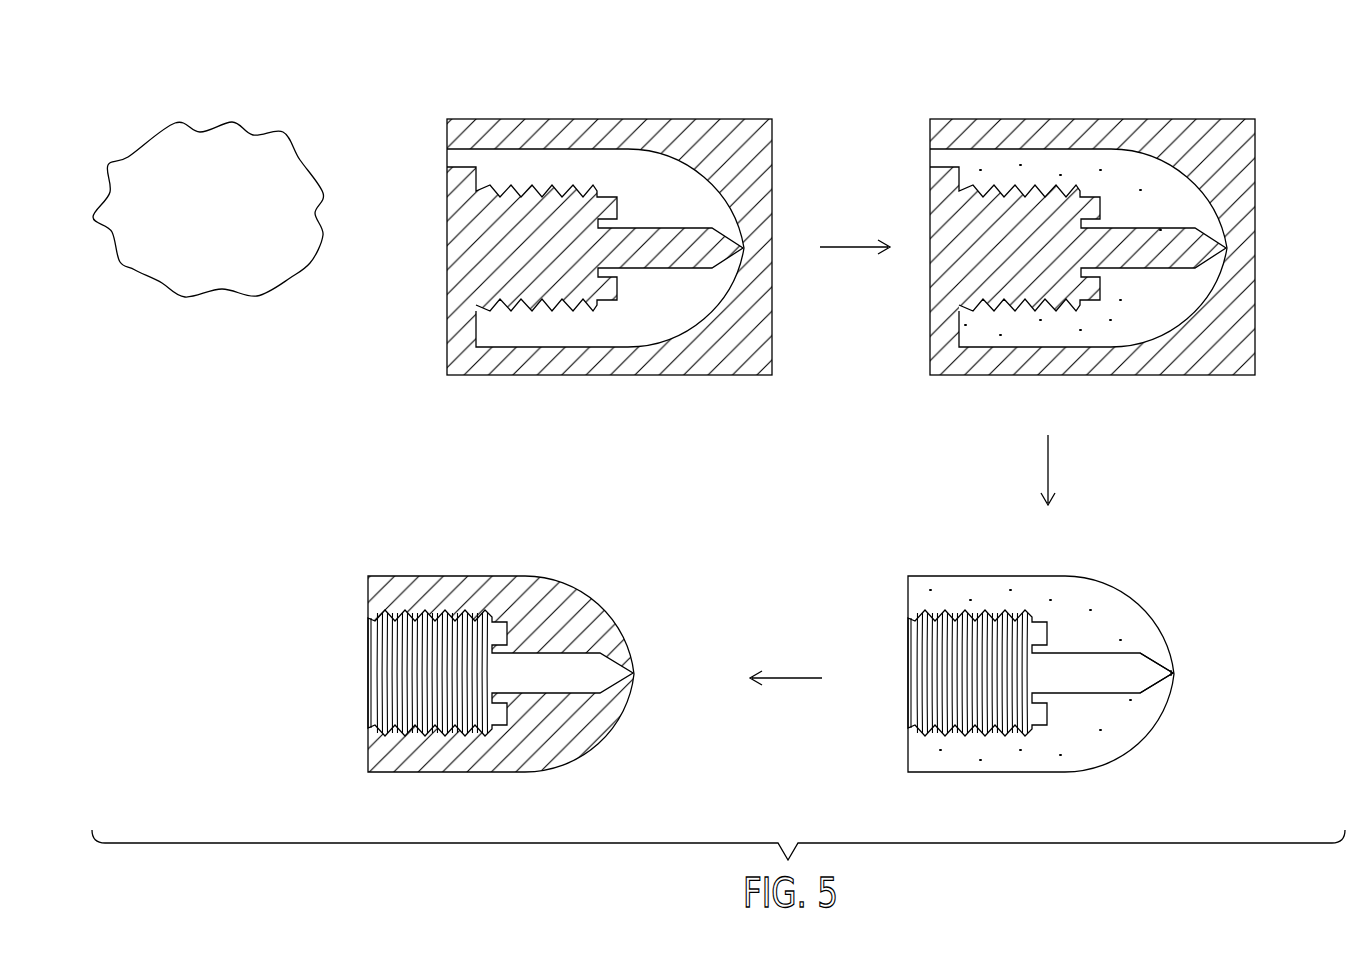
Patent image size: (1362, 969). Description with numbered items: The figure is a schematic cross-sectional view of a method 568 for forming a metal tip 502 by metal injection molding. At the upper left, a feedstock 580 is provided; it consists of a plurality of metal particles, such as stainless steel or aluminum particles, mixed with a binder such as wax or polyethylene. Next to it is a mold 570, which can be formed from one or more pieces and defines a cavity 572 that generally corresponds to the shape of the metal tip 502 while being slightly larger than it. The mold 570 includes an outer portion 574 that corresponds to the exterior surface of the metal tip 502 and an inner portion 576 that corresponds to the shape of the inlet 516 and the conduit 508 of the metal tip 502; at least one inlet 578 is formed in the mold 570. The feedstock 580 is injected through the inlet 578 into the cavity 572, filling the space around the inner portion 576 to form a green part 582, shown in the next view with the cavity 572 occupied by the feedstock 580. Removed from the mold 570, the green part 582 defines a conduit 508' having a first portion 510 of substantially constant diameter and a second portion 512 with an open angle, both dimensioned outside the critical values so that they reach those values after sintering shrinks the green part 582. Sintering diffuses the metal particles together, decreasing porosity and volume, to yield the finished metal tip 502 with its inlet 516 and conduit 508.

The metal tip 502 is at (549, 578).
The conduit 508 is at (524, 650).
The conduit 508' is at (1048, 625).
The first portion 510 is at (1157, 660).
The second portion 512 is at (1172, 684).
The inlet 516 is at (431, 648).
The method 568 is at (1246, 60).
The mold 570 is at (645, 118).
The cavity 572 is at (668, 192).
The outer portion 574 is at (595, 136).
The inner portion 576 is at (551, 267).
The inlet 578 is at (438, 158).
The feedstock 580 is at (182, 162).
The green part 582 is at (1162, 205).